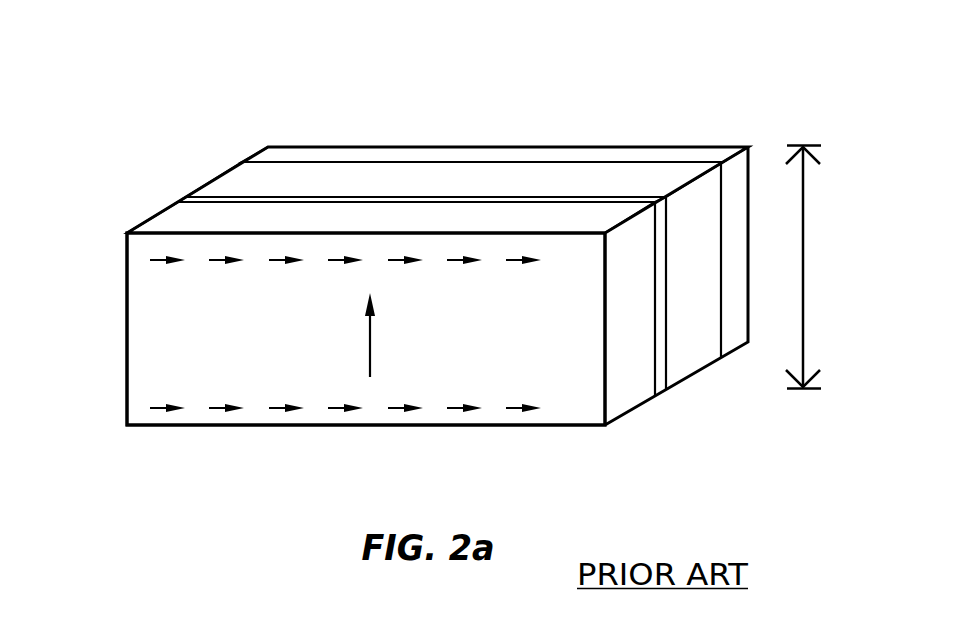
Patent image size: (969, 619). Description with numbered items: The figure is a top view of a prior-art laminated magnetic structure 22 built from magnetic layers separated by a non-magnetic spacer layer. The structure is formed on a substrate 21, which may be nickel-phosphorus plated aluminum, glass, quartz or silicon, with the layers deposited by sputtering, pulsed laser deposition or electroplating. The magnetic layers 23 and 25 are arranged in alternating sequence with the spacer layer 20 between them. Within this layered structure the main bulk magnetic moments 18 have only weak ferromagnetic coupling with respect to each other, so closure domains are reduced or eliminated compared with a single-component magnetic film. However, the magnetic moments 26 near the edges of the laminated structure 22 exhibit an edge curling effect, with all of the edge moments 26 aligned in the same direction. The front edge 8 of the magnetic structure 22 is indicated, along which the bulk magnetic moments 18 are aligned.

The front edge 8 is at (803, 267).
The magnetic moments 18 is at (368, 320).
The spacer layer 20 is at (415, 202).
The substrate 21 is at (313, 155).
The magnetic structure 22 is at (507, 120).
The magnetic layer 23 is at (177, 217).
The magnetic layer 25 is at (617, 173).
The edge magnetic moments 26 is at (528, 412).